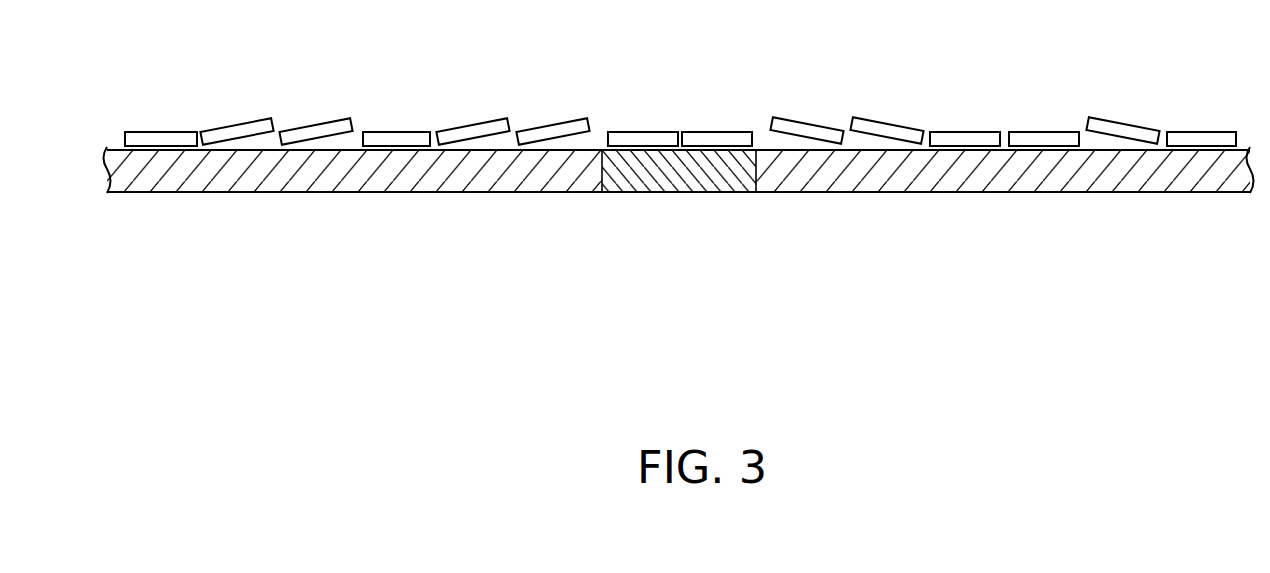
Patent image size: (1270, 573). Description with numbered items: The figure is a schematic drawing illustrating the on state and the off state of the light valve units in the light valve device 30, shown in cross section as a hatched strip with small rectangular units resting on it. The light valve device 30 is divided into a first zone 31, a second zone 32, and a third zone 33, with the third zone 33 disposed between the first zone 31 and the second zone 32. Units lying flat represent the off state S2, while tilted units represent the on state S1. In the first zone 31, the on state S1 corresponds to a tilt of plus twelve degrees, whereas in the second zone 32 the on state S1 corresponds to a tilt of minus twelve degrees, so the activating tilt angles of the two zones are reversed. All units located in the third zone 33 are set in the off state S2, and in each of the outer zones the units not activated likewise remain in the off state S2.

The light valve device 30 is at (328, 210).
The first zone 31 is at (1000, 172).
The second zone 32 is at (450, 178).
The third zone 33 is at (676, 176).
The on state S1 is at (468, 130).
The off state S2 is at (160, 132).